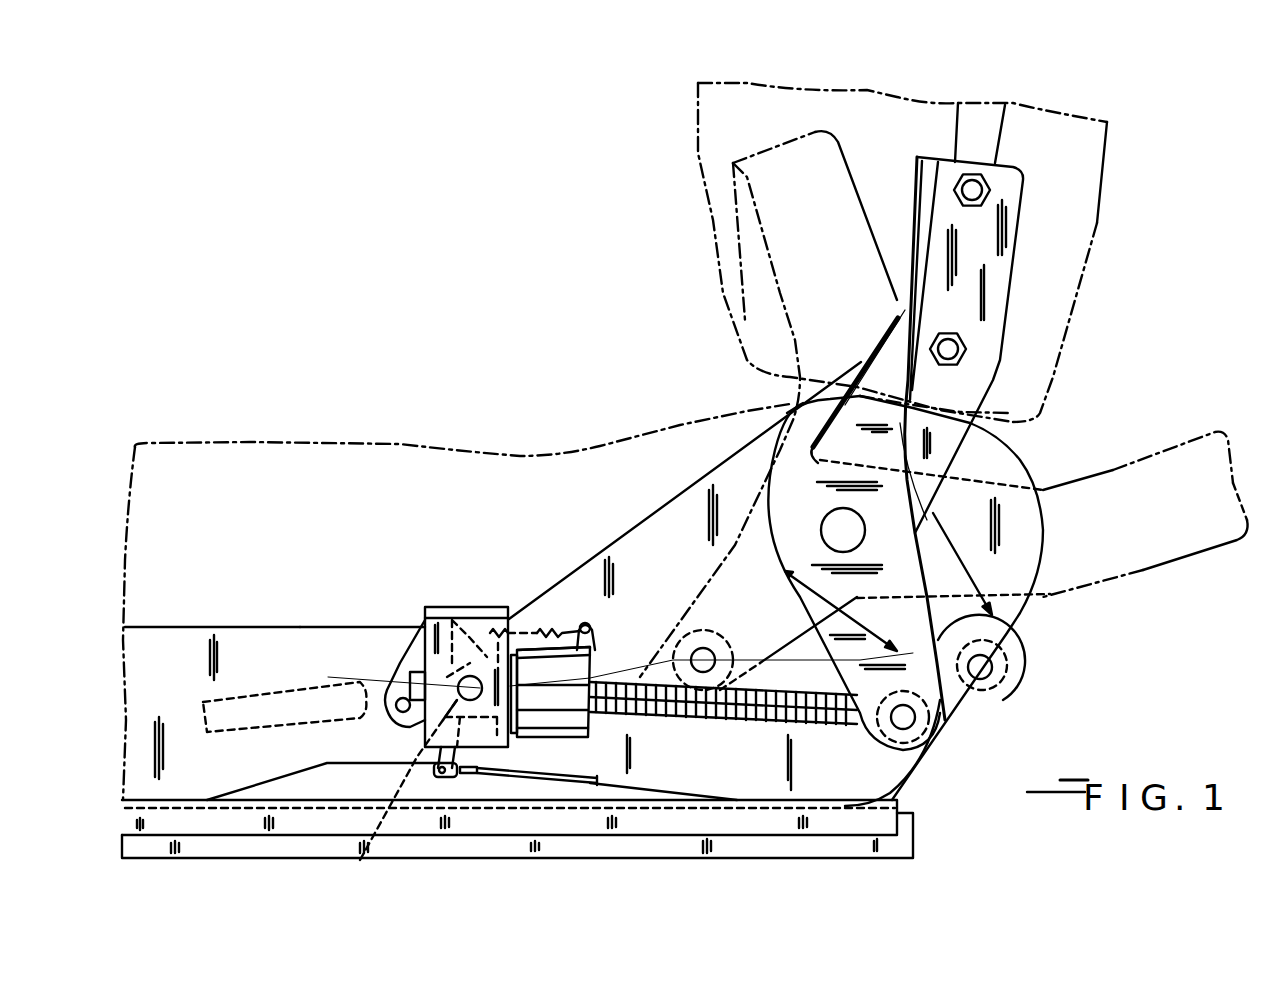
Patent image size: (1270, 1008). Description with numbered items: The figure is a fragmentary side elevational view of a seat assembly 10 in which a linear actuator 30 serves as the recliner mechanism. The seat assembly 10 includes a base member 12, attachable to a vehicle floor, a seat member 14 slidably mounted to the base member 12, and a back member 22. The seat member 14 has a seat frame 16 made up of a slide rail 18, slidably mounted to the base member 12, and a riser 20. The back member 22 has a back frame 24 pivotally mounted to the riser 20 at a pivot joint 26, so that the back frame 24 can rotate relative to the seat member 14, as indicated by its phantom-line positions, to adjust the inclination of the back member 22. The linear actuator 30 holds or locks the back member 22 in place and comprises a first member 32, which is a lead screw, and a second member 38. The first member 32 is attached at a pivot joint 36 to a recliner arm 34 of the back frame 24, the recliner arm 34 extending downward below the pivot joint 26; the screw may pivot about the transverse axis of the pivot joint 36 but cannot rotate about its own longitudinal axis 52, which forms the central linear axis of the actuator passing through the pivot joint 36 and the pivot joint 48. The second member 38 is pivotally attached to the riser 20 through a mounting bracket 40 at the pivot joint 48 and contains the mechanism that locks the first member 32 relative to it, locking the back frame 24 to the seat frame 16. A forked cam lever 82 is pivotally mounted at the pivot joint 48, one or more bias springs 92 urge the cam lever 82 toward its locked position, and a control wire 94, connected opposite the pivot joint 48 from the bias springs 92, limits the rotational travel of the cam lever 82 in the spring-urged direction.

The seat assembly 10 is at (575, 332).
The base member 12 is at (657, 843).
The seat member 14 is at (360, 445).
The seat frame 16 is at (252, 625).
The slide rail 18 is at (907, 800).
The riser 20 is at (338, 627).
The back member 22 is at (1109, 220).
The back frame 24 is at (748, 165).
The pivot joint 26 is at (822, 538).
The linear actuator 30 is at (572, 748).
The first member 32 is at (763, 738).
The recliner arm 34 is at (1005, 617).
The pivot joint 36 is at (940, 720).
The second member 38 is at (575, 662).
The mounting bracket 40 is at (453, 607).
The pivot joint 48 is at (430, 727).
The longitudinal axis 52 is at (353, 677).
The cam lever 82 is at (388, 800).
The bias springs 92 is at (553, 628).
The control wire 94 is at (590, 785).